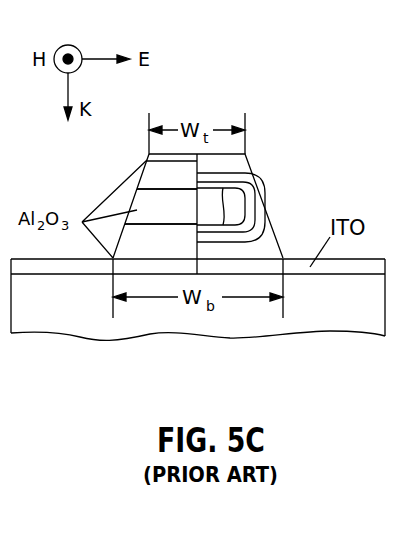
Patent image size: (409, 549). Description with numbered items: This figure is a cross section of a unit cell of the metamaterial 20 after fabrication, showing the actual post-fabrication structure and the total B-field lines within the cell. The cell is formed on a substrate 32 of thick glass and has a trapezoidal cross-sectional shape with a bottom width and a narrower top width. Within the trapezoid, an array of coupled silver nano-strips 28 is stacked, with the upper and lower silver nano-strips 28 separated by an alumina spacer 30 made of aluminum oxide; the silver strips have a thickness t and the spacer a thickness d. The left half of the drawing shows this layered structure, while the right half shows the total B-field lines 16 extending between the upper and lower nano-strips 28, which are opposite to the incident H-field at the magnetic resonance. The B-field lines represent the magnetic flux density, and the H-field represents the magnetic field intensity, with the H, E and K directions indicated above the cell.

The metamaterial 20 is at (299, 122).
The silver nano-strips 28 is at (145, 177).
The alumina spacer 30 is at (140, 195).
The emitter / quantum dot region 16 is at (225, 208).
The substrate 32 is at (362, 320).